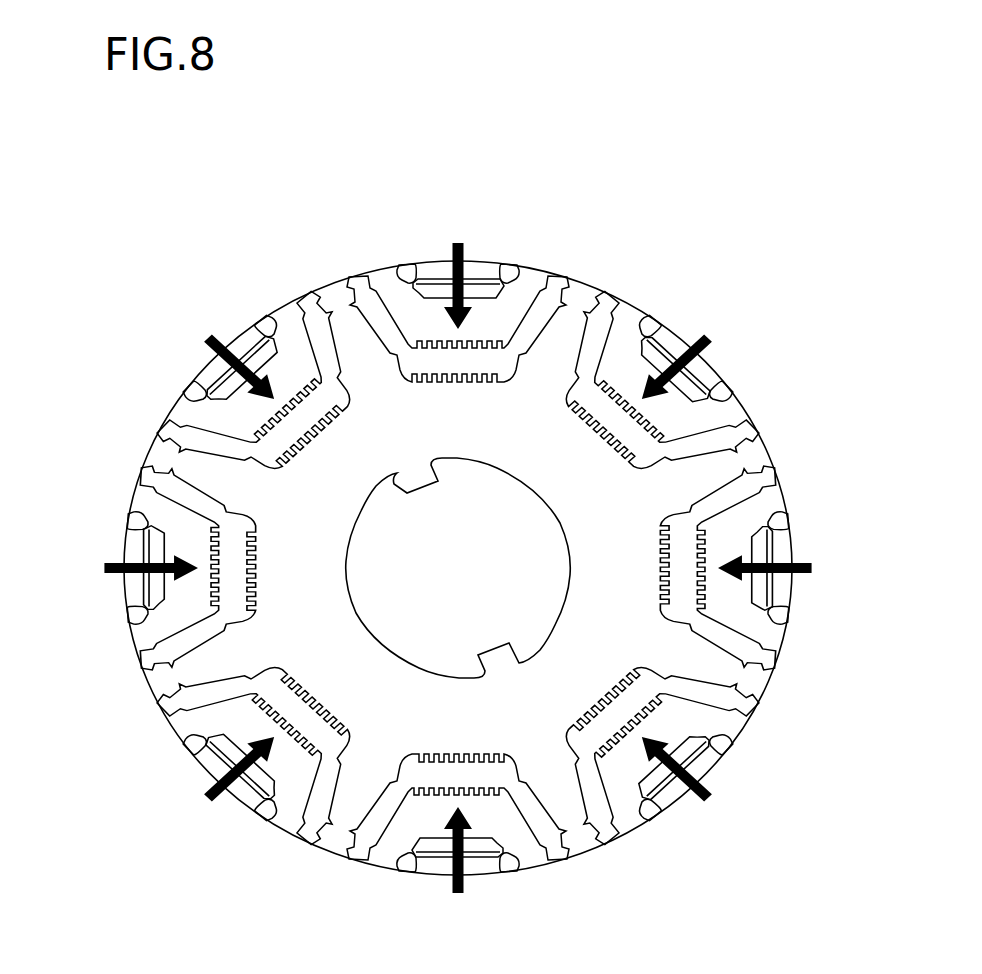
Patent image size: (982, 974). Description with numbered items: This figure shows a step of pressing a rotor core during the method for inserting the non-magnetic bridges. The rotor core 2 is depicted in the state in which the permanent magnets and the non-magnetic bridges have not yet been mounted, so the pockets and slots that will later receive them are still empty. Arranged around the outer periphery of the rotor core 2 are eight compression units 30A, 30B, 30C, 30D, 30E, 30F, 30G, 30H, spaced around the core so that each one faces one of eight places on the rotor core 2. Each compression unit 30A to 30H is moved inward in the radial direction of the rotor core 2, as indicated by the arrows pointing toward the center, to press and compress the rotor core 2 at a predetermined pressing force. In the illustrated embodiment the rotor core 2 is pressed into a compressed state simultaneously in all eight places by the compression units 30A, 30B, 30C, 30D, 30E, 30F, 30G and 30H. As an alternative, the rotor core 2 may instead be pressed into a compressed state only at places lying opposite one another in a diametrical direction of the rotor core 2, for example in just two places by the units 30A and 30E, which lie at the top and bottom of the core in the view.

The rotor core 2 is at (753, 456).
The compression unit 30A is at (442, 236).
The compression unit 30B is at (658, 384).
The compression unit 30C is at (759, 568).
The compression unit 30D is at (658, 751).
The compression unit 30E is at (458, 845).
The compression unit 30F is at (258, 751).
The compression unit 30G is at (157, 568).
The compression unit 30H is at (258, 384).